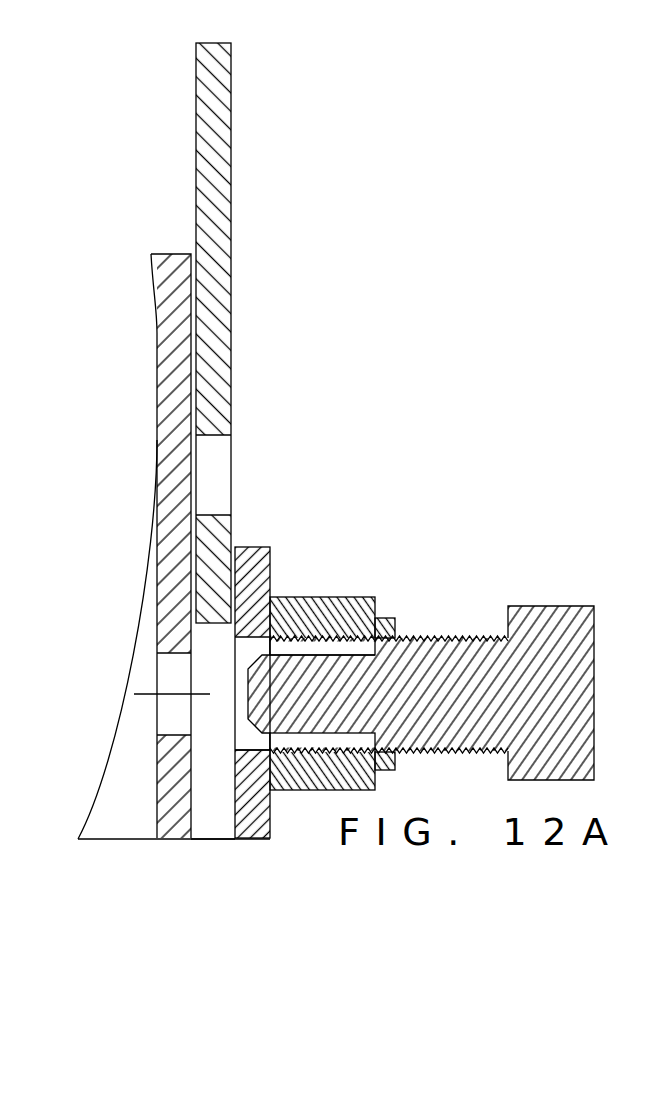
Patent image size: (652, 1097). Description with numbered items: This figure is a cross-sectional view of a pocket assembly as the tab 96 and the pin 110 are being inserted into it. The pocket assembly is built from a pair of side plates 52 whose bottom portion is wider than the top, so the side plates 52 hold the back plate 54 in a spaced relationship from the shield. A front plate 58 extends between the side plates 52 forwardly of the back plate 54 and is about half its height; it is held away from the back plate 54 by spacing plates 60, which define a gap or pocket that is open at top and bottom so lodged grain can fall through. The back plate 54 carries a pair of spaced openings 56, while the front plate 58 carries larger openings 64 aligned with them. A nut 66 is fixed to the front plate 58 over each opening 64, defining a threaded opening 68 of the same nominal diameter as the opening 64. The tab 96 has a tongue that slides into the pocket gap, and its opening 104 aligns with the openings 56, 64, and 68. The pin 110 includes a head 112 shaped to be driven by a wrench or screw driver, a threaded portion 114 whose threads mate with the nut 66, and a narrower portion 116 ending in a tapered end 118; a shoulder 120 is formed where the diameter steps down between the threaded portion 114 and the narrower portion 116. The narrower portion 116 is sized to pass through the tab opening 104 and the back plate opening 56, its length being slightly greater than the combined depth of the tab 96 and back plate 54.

The side plate 52 is at (134, 729).
The back plate 54 is at (170, 363).
The opening 56 is at (174, 656).
The front plate 58 is at (270, 558).
The spacing plate 60 is at (220, 826).
The opening 64 is at (238, 745).
The nut 66 is at (335, 597).
The threaded opening 68 is at (292, 648).
The tab 96 is at (232, 153).
The opening 104 is at (215, 515).
The pin 110 is at (363, 653).
The head 112 is at (578, 606).
The threaded portion 114 is at (470, 636).
The narrower portion 116 is at (345, 655).
The tapered end 118 is at (254, 662).
The shoulder 120 is at (396, 622).